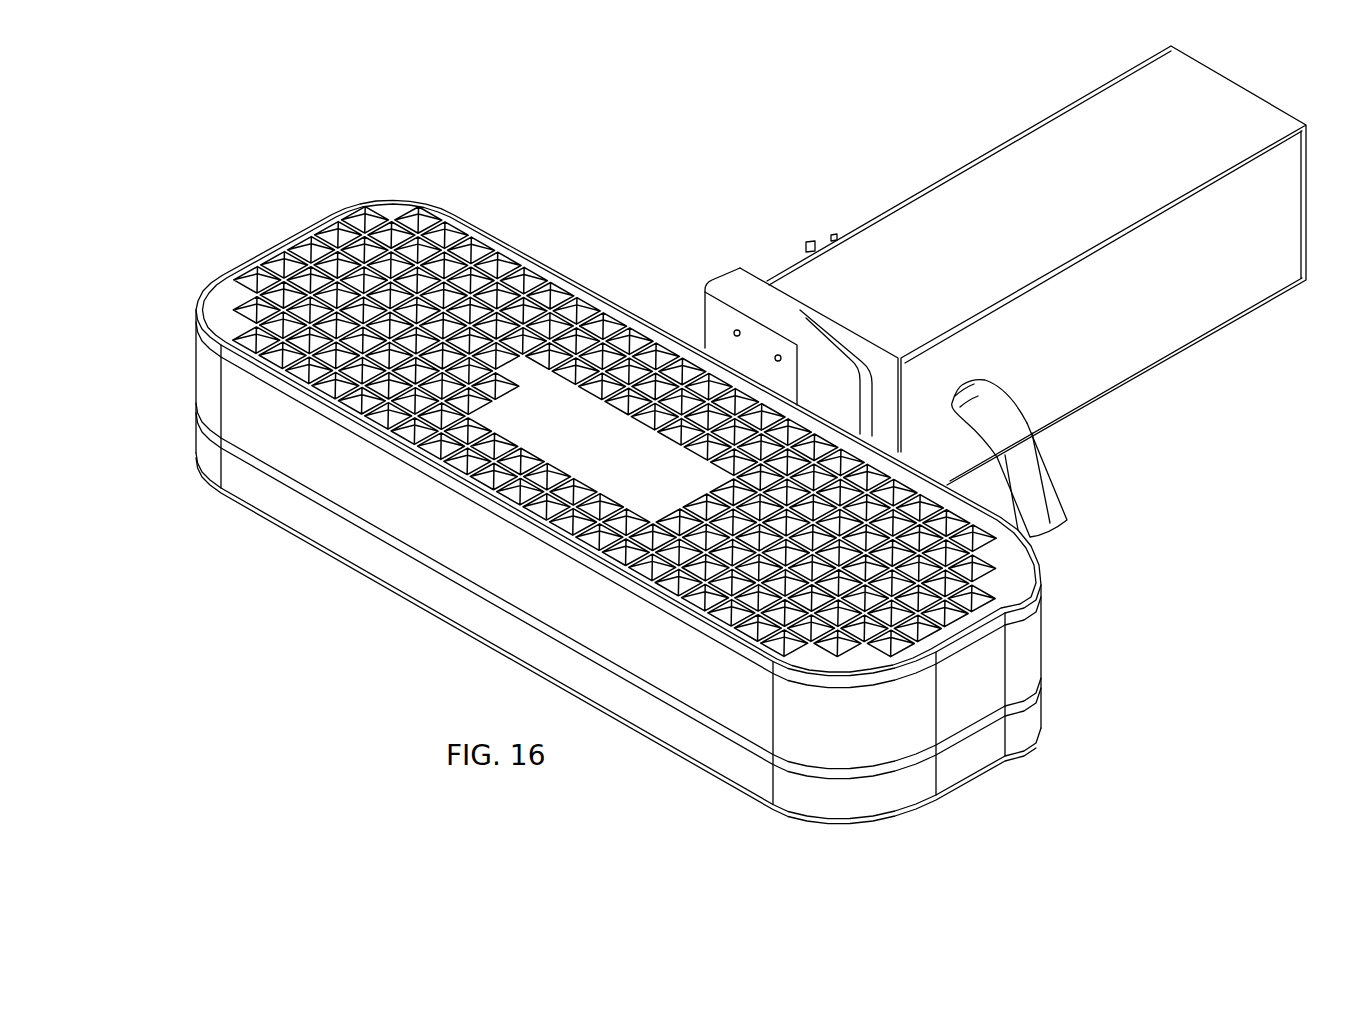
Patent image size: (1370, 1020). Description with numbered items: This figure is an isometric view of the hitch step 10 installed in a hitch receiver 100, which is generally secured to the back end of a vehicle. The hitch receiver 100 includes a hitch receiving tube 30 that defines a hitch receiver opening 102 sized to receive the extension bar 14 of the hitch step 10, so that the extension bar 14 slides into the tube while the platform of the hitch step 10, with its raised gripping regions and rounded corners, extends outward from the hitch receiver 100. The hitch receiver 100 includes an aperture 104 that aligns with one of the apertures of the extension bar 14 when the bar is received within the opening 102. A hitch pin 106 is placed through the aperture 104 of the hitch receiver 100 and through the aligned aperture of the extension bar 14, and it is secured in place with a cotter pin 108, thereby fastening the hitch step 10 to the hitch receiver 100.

The hitch step 10 is at (566, 284).
The extension bar 14 is at (737, 330).
The hitch receiving tube 30 is at (976, 172).
The hitch receiver 100 is at (881, 232).
The hitch receiver opening 102 is at (775, 356).
The aperture 104 is at (972, 377).
The hitch pin 106 is at (1043, 467).
The cotter pin 108 is at (829, 232).